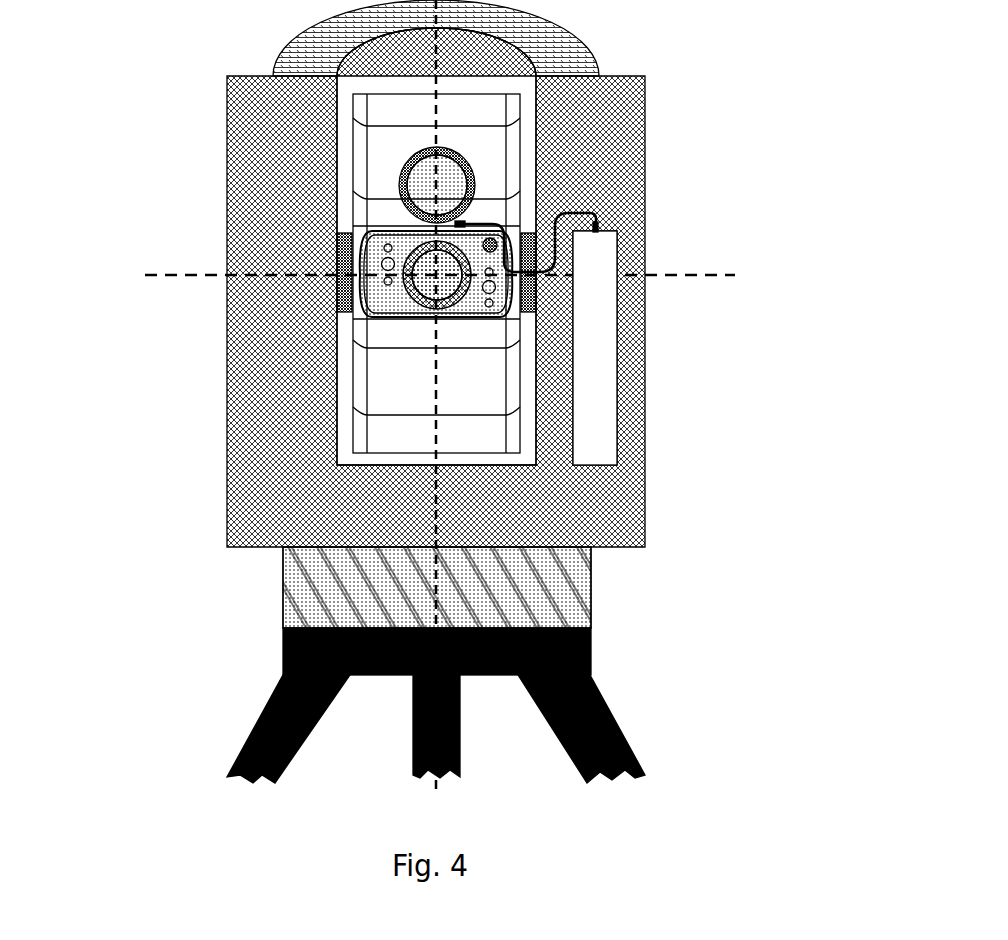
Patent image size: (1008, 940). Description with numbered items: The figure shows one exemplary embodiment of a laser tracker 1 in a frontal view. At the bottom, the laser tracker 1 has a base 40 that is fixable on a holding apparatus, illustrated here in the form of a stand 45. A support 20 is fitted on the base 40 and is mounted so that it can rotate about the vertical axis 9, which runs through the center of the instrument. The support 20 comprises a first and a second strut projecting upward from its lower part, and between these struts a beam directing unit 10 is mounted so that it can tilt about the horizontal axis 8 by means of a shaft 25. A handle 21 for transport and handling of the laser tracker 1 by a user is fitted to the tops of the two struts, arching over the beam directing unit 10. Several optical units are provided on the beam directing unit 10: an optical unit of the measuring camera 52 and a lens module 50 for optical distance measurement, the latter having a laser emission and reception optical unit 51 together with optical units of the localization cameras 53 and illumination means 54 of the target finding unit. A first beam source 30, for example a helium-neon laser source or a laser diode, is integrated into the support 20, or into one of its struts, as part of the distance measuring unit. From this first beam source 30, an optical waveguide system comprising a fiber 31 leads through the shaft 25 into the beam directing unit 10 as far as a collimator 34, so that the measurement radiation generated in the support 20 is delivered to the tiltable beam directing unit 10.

The laser tracker 1 is at (203, 55).
The horizontal axis 8 is at (672, 277).
The vertical axis 9 is at (433, 65).
The beam directing unit 10 is at (395, 143).
The support 20 is at (632, 517).
The handle 21 is at (570, 40).
The shaft 25 is at (370, 313).
The first beam source 30 is at (603, 360).
The fiber 31 is at (597, 222).
The collimator 34 is at (470, 223).
The base 40 is at (312, 603).
The stand 45 is at (297, 655).
The lens module 50 is at (365, 247).
The laser emission and reception optical unit 51 is at (423, 285).
The measuring camera 52 is at (420, 190).
The localization cameras 53 is at (337, 272).
The illumination means 54 is at (382, 267).